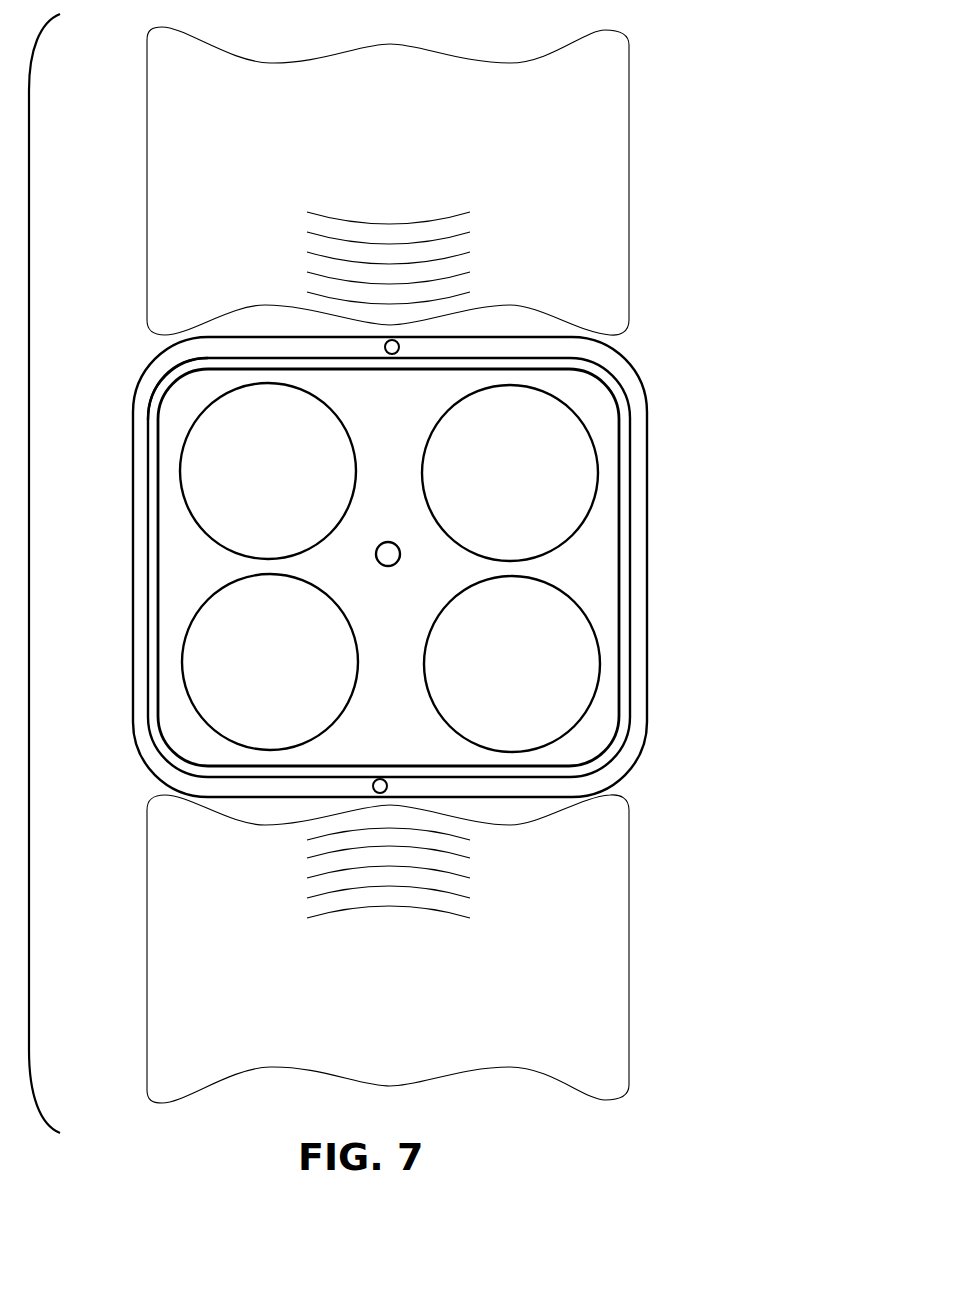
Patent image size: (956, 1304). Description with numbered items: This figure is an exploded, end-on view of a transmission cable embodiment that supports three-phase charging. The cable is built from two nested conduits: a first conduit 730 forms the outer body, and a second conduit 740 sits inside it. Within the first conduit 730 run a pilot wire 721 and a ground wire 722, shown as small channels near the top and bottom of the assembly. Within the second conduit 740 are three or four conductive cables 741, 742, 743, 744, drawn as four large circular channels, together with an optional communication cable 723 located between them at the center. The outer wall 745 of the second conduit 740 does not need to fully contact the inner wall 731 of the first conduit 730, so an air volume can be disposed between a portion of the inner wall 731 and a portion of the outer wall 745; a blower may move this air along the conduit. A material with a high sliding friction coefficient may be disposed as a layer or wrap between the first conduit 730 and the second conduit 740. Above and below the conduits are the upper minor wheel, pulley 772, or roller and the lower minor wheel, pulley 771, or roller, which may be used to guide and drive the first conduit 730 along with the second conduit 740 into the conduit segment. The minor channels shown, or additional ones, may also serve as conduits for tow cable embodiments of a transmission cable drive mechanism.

The upper minor wheel, pulley 772 is at (629, 158).
The lower minor wheel, pulley 771 is at (630, 932).
The second conduit 740 is at (616, 598).
The first conduit 730 is at (647, 555).
The inner wall 731 is at (592, 368).
The outer wall 745 is at (174, 397).
The conductive cable 741 is at (268, 471).
The conductive cable 742 is at (510, 473).
The conductive cable 743 is at (270, 662).
The conductive cable 744 is at (512, 664).
The pilot wire 721 is at (399, 346).
The ground wire 722 is at (373, 786).
The communication cable 723 is at (380, 544).